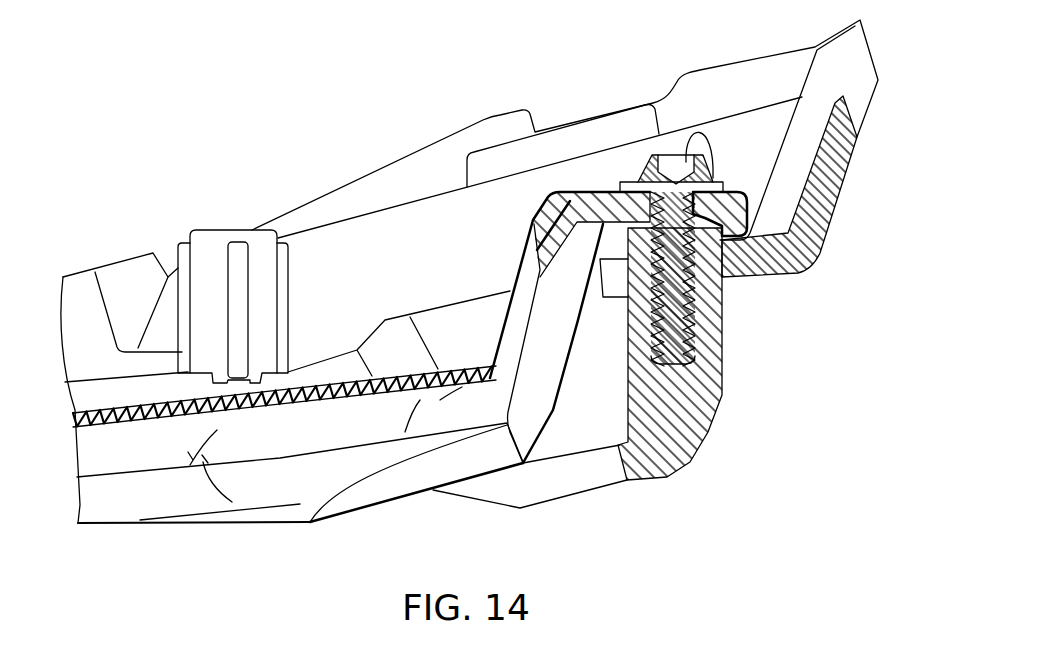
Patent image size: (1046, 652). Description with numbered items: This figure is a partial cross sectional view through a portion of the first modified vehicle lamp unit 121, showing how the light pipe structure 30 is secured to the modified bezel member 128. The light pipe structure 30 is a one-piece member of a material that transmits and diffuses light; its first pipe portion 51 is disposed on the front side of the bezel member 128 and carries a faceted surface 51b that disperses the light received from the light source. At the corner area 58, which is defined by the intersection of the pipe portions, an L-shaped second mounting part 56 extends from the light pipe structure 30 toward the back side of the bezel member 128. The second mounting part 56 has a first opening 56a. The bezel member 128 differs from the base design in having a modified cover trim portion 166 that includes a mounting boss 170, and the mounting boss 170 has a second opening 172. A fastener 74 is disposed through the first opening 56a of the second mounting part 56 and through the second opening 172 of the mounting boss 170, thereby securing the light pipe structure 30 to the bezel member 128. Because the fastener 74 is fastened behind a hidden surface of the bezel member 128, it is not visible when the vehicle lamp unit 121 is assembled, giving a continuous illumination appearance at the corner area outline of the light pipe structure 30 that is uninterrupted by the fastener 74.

The vehicle lamp unit 121 is at (193, 145).
The bezel member 128 is at (88, 271).
The faceted surface 51b is at (175, 411).
The light pipe structure 30 is at (277, 524).
The first pipe portion 51 is at (330, 524).
The corner area 58 is at (430, 491).
The cover trim portion 166 is at (518, 511).
The second mounting part 56 is at (535, 212).
The first opening 56a is at (705, 173).
The fastener 74 is at (687, 140).
The second opening 172 is at (682, 256).
The mounting boss 170 is at (725, 342).